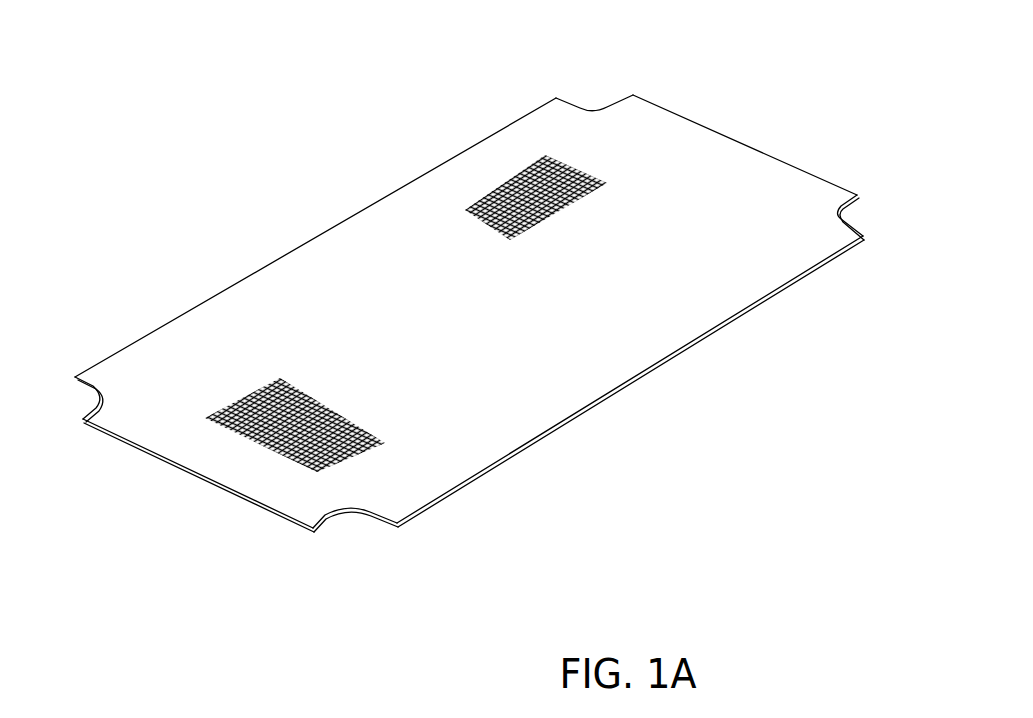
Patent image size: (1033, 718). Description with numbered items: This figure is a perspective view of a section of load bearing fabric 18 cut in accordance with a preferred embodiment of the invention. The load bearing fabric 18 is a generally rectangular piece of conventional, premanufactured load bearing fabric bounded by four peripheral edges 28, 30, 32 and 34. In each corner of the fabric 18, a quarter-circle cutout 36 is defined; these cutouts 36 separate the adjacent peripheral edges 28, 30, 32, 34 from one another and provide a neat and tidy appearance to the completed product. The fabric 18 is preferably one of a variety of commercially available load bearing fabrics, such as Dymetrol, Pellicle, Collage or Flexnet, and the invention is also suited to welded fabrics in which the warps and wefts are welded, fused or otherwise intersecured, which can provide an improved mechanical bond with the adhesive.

The load bearing fabric 18 is at (300, 147).
The peripheral edge 28 is at (378, 197).
The peripheral edge 30 is at (714, 142).
The peripheral edge 32 is at (652, 355).
The peripheral edge 34 is at (207, 467).
The quarter-circle cutout 36 is at (594, 108).